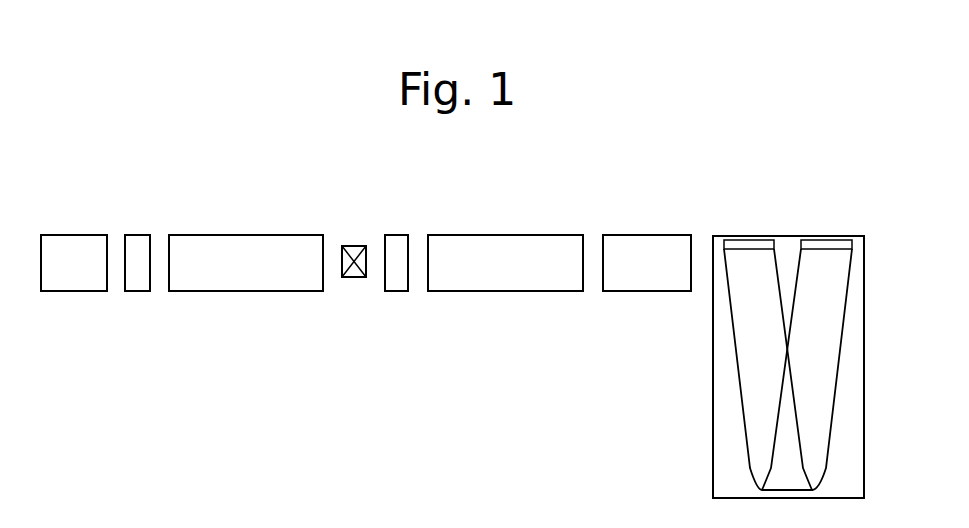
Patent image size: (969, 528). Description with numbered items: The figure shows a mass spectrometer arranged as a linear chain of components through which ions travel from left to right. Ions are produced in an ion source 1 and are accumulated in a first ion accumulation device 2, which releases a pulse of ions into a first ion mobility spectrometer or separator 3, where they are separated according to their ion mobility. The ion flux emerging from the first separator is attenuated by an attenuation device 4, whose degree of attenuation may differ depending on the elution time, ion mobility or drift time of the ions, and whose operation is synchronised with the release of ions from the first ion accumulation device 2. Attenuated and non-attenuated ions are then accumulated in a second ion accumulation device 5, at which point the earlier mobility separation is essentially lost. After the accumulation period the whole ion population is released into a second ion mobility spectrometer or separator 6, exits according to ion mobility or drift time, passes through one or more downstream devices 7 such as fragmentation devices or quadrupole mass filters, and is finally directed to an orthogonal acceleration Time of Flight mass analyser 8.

The ion source 1 is at (78, 231).
The first ion accumulation device 2 is at (138, 231).
The first ion mobility spectrometer or separator 3 is at (250, 231).
The attenuation device 4 is at (352, 241).
The second ion accumulation device 5 is at (399, 231).
The second ion mobility spectrometer or separator 6 is at (517, 231).
The downstream devices 7 is at (623, 231).
The orthogonal acceleration Time of Flight mass analyser 8 is at (778, 231).